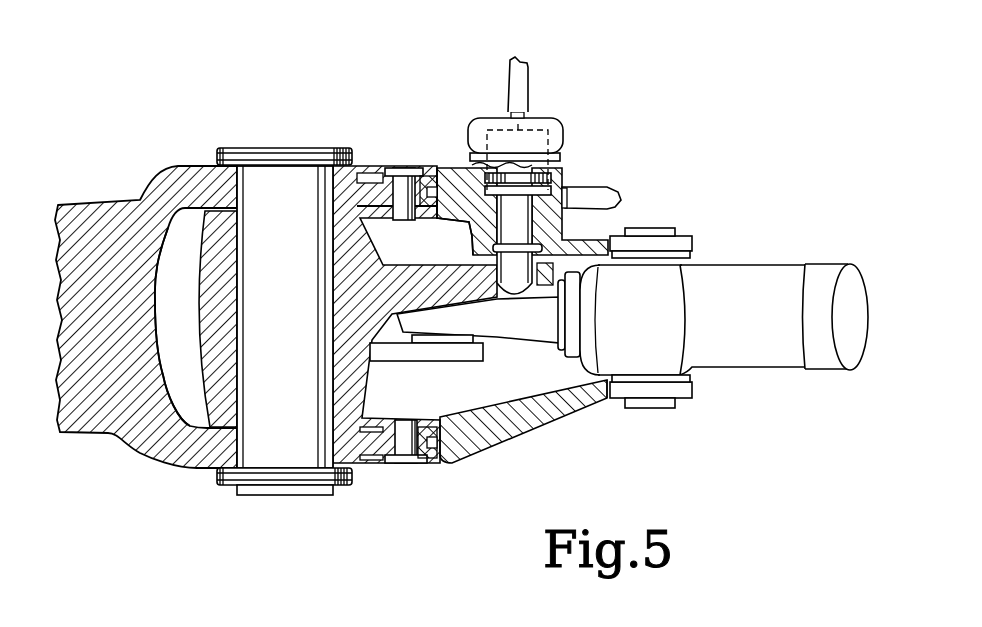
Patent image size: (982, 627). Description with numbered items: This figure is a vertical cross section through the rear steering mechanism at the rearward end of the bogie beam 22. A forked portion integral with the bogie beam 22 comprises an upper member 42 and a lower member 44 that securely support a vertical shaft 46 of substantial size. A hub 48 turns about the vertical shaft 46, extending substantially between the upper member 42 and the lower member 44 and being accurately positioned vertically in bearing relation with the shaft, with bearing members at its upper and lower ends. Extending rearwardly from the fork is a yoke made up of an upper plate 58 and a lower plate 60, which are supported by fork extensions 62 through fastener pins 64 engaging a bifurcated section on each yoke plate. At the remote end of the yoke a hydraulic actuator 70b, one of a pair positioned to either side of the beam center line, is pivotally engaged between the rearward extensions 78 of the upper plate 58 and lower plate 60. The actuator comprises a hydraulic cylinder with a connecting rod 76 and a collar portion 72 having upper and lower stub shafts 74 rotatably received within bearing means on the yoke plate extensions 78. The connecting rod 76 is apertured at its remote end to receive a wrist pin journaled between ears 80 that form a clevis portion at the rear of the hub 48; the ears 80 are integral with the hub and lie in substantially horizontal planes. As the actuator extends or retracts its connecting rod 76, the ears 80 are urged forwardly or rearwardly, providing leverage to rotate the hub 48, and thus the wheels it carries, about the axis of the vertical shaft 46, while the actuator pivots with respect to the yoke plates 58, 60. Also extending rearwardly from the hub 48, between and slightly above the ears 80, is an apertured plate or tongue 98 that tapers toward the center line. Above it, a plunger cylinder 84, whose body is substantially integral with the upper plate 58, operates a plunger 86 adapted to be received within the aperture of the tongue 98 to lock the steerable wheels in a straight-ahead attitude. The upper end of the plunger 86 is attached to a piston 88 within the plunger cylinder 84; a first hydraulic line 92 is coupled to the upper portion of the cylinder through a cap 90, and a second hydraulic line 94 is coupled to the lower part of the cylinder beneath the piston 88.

The bogie beam 22 is at (115, 440).
The upper member 42 is at (220, 185).
The lower member 44 is at (215, 453).
The vertical shaft 46 is at (304, 326).
The hub 48 is at (200, 255).
The upper plate 58 is at (453, 165).
The lower plate 60 is at (562, 422).
The fork extensions 62 is at (448, 170).
The fastener pins 64 is at (407, 172).
The hydraulic actuator 70b is at (762, 347).
The collar portion 72 is at (665, 311).
The stub shafts 74 is at (642, 228).
The connecting rod 76 is at (527, 317).
The rearward extensions 78 is at (593, 398).
The ears 80 is at (447, 350).
The plunger cylinder 84 is at (537, 163).
The plunger 86 is at (517, 267).
The piston 88 is at (528, 167).
The cap 90 is at (549, 122).
The first hydraulic line 92 is at (507, 80).
The second hydraulic line 94 is at (593, 185).
The apertured plate or tongue 98 is at (583, 266).